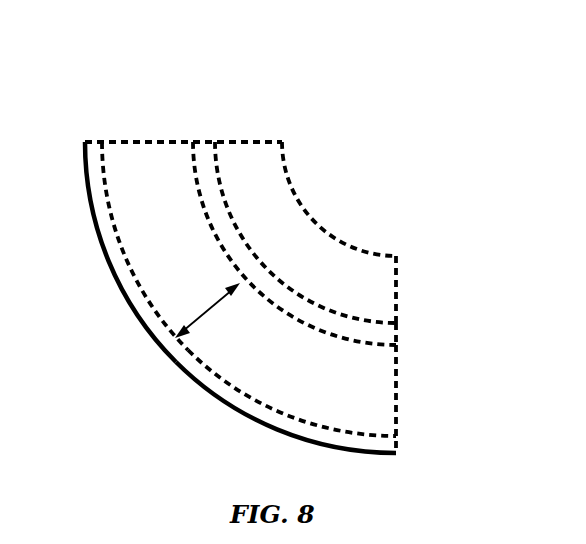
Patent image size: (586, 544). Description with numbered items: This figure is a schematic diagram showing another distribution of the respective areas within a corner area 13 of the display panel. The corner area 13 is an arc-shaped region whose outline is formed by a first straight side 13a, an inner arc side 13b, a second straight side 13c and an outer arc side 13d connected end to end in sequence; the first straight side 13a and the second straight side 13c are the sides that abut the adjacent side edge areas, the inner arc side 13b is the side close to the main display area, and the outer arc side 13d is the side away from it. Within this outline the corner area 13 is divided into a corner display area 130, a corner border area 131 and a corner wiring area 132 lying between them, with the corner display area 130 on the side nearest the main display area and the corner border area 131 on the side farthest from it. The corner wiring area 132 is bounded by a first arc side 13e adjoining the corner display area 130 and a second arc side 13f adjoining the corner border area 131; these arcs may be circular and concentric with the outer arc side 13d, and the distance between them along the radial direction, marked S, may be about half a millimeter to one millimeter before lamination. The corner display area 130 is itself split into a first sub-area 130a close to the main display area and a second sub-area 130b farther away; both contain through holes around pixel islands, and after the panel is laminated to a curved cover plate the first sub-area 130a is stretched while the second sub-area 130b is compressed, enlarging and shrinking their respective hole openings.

The corner area 13 is at (71, 35).
The corner border area 131 is at (95, 163).
The corner wiring area 132 is at (367, 398).
The first straight side 13a is at (396, 360).
The inner arc side 13b is at (315, 220).
The second straight side 13c is at (222, 142).
The outer arc side 13d is at (180, 367).
The first arc side 13e is at (320, 335).
The second arc side 13f is at (105, 190).
The corner display area 130 is at (474, 285).
The first sub-area 130a is at (378, 283).
The second sub-area 130b is at (374, 333).